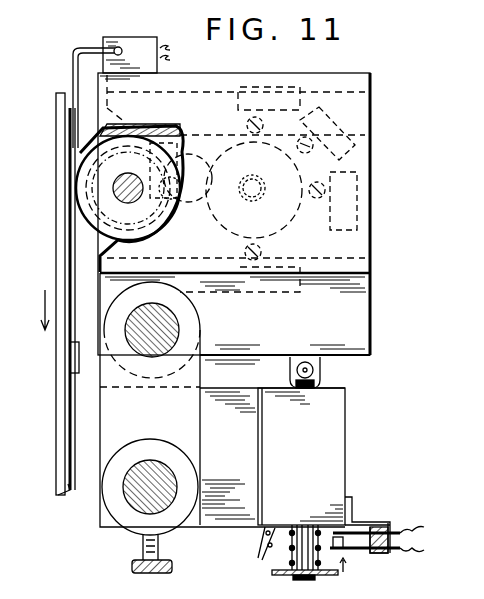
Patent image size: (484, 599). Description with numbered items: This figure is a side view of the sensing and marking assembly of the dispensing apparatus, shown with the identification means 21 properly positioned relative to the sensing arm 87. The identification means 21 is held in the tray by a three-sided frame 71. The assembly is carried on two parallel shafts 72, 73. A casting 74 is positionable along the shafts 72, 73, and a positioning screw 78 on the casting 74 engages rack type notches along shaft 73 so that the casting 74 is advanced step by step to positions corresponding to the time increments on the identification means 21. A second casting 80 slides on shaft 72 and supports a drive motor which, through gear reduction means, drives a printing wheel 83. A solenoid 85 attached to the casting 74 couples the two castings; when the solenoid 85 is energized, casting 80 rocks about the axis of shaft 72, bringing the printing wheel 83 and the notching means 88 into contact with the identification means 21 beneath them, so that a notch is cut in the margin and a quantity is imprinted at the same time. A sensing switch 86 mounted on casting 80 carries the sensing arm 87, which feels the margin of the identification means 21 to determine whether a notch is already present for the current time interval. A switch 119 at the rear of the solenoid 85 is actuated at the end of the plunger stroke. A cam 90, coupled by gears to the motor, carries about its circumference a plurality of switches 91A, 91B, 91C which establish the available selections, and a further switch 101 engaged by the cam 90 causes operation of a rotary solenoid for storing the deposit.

The identification means 21 is at (74, 263).
The three-sided frame 71 is at (70, 360).
The shaft 72 is at (172, 327).
The shaft 73 is at (145, 500).
The casting 74 is at (225, 515).
The positioning screw 78 is at (172, 567).
The second casting 80 is at (362, 341).
The printing wheel 83 is at (88, 218).
The solenoid 85 is at (297, 473).
The sensing switch 86 is at (143, 43).
The sensing arm 87 is at (75, 50).
The notching means 88 is at (83, 147).
The cam 90 is at (286, 226).
The switch 91A is at (360, 206).
The switch 91B is at (297, 294).
The switch 91C is at (257, 84).
The switch 101 is at (345, 125).
The switch 119 is at (352, 560).